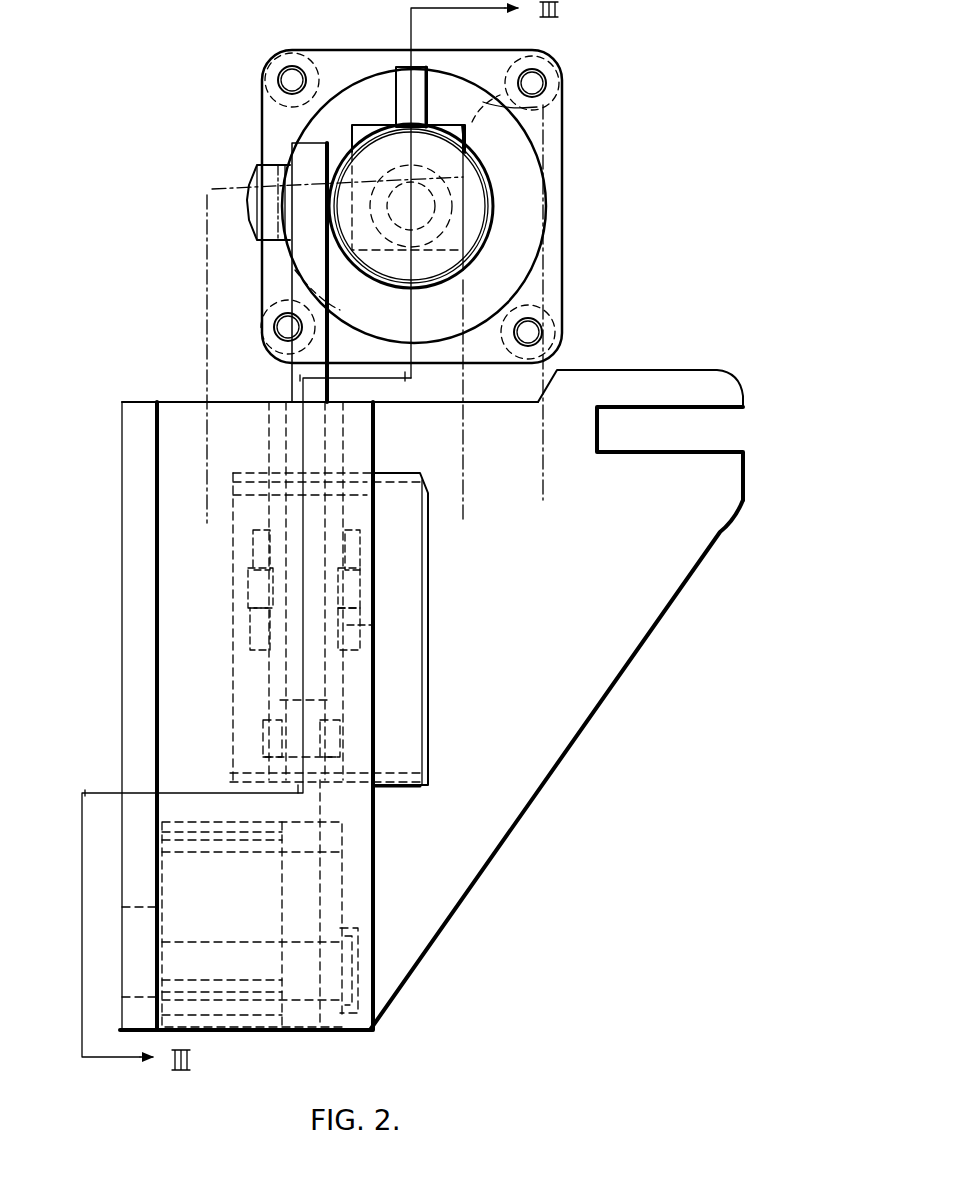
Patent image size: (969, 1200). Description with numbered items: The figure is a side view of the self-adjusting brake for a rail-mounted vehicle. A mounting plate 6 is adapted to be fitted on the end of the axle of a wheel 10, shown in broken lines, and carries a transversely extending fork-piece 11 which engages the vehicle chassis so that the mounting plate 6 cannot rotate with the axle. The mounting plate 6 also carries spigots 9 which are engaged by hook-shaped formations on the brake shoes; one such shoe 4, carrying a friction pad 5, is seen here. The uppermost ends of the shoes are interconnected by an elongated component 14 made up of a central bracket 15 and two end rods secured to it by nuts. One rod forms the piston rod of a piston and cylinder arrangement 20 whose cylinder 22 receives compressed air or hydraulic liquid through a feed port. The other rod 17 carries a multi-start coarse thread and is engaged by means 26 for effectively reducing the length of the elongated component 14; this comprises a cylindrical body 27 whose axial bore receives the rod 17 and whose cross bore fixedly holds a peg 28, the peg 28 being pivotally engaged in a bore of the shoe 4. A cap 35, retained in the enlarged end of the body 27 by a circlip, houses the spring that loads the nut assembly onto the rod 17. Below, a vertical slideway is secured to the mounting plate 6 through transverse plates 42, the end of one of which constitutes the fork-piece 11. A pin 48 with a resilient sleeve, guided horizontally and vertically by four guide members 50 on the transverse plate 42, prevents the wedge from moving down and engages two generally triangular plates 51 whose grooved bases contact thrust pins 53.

The shoe 4 is at (300, 592).
The friction pad 5 is at (402, 755).
The mounting plate 6 is at (142, 633).
The spigot 9 is at (140, 940).
The wheel 10 is at (545, 122).
The fork-piece 11 is at (565, 707).
The elongated component 14 is at (580, 180).
The central bracket 15 is at (402, 66).
The rod 17 is at (482, 262).
The piston and cylinder arrangement 20 is at (520, 298).
The cylinder 22 is at (508, 265).
The means for reducing the length of the elongated component 26 is at (505, 158).
The cylindrical body 27 is at (363, 267).
The peg 28 is at (252, 200).
The cap 35 is at (455, 222).
The transverse plate 42 is at (407, 930).
The pin 48 is at (347, 590).
The guide member 50 is at (350, 545).
The triangular plate 51 is at (280, 688).
The thrust pin 53 is at (338, 512).